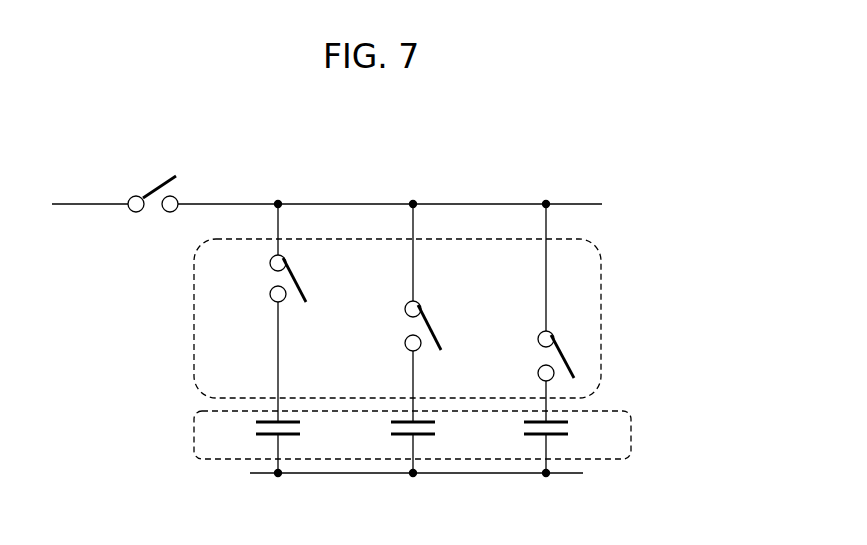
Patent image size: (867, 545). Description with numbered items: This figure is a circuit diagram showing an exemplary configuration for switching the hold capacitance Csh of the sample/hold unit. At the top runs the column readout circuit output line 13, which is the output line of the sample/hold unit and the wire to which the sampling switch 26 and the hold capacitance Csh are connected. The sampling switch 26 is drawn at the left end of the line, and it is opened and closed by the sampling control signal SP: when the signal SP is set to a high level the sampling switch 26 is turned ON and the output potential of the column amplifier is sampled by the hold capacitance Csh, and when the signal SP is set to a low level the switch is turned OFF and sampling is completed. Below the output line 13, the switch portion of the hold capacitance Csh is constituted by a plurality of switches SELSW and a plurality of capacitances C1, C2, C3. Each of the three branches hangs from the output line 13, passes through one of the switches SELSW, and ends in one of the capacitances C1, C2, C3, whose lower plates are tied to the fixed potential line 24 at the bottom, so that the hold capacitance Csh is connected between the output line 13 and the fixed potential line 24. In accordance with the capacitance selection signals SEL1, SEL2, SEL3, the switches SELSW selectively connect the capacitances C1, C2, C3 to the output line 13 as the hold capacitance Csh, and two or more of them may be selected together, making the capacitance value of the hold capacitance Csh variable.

The column readout circuit output line 13 is at (569, 204).
The sampling switch 26 is at (176, 176).
The sampling control signal SP is at (155, 172).
The switch SELSW is at (194, 343).
The capacitance selection signal SEL1 is at (311, 270).
The capacitance selection signal SEL2 is at (452, 318).
The capacitance selection signal SEL3 is at (572, 362).
The hold capacitance Csh is at (633, 433).
The capacitance C1 is at (295, 427).
The capacitance C2 is at (430, 427).
The capacitance C3 is at (563, 427).
The fixed potential line 24 is at (567, 476).